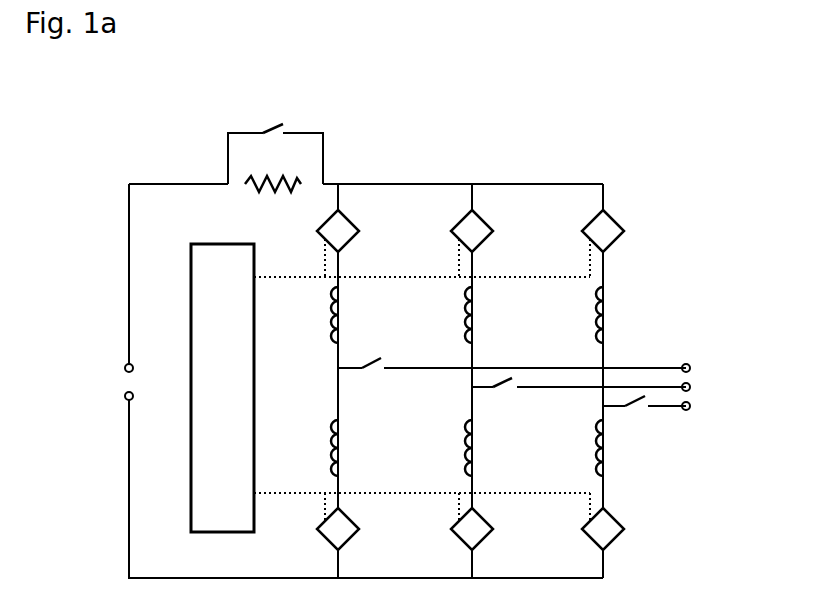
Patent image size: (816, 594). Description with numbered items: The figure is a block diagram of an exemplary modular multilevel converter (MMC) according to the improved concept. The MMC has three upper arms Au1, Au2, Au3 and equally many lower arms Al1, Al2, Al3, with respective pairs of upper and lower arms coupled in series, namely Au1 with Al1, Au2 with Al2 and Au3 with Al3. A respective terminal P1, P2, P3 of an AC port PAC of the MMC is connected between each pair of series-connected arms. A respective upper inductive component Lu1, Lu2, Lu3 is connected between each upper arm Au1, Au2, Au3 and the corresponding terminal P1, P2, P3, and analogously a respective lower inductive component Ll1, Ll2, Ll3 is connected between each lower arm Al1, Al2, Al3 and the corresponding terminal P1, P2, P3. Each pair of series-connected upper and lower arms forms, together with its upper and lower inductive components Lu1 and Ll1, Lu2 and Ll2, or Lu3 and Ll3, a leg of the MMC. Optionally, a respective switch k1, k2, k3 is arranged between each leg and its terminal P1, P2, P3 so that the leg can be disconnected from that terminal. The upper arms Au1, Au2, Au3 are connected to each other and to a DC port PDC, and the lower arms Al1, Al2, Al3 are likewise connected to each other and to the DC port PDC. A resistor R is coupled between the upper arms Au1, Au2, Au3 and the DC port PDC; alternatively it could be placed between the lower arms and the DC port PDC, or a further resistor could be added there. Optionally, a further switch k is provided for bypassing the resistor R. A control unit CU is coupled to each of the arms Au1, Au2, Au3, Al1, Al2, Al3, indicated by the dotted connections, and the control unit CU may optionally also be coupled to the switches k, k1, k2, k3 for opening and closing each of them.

The DC port PDC is at (102, 382).
The control unit CU is at (222, 388).
The further switch k is at (269, 114).
The resistor R is at (275, 170).
The upper arm Au1 is at (355, 226).
The upper arm Au2 is at (489, 226).
The upper arm Au3 is at (621, 226).
The lower arm Al1 is at (358, 536).
The lower arm Al2 is at (492, 536).
The lower arm Al3 is at (625, 536).
The upper inductive component Lu1 is at (360, 315).
The upper inductive component Lu2 is at (494, 315).
The upper inductive component Lu3 is at (627, 315).
The lower inductive component Ll1 is at (354, 449).
The lower inductive component Ll2 is at (488, 449).
The lower inductive component Ll3 is at (621, 449).
The switch k1 is at (512, 378).
The switch k2 is at (579, 398).
The switch k3 is at (644, 419).
The terminal P1 is at (701, 367).
The terminal P2 is at (701, 389).
The terminal P3 is at (701, 414).
The AC port PAC is at (731, 387).